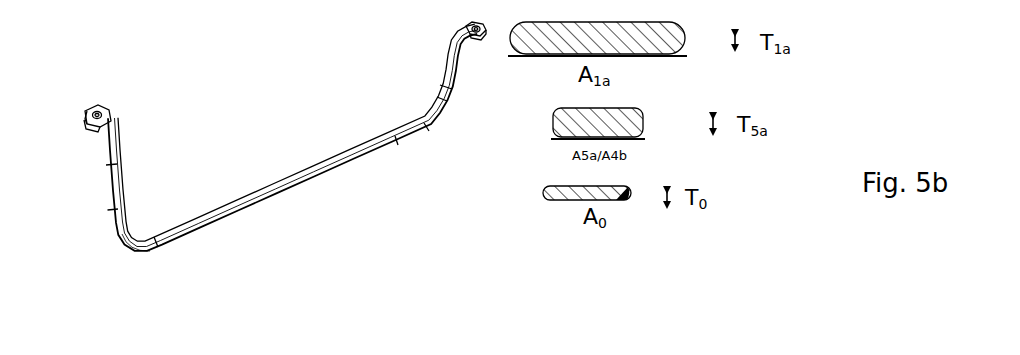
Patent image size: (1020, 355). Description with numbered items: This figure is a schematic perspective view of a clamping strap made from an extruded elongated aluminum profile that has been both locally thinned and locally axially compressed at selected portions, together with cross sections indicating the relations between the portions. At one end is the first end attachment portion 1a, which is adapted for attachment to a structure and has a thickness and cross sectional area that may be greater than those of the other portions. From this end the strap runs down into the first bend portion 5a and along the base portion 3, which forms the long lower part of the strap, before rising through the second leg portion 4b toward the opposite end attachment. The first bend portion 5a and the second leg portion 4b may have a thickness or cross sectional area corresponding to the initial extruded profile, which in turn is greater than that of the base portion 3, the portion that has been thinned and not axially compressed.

The first end attachment portion 1a is at (100, 106).
The base portion 3 is at (316, 171).
The second leg portion 4b is at (441, 104).
The first bend portion 5a is at (131, 253).